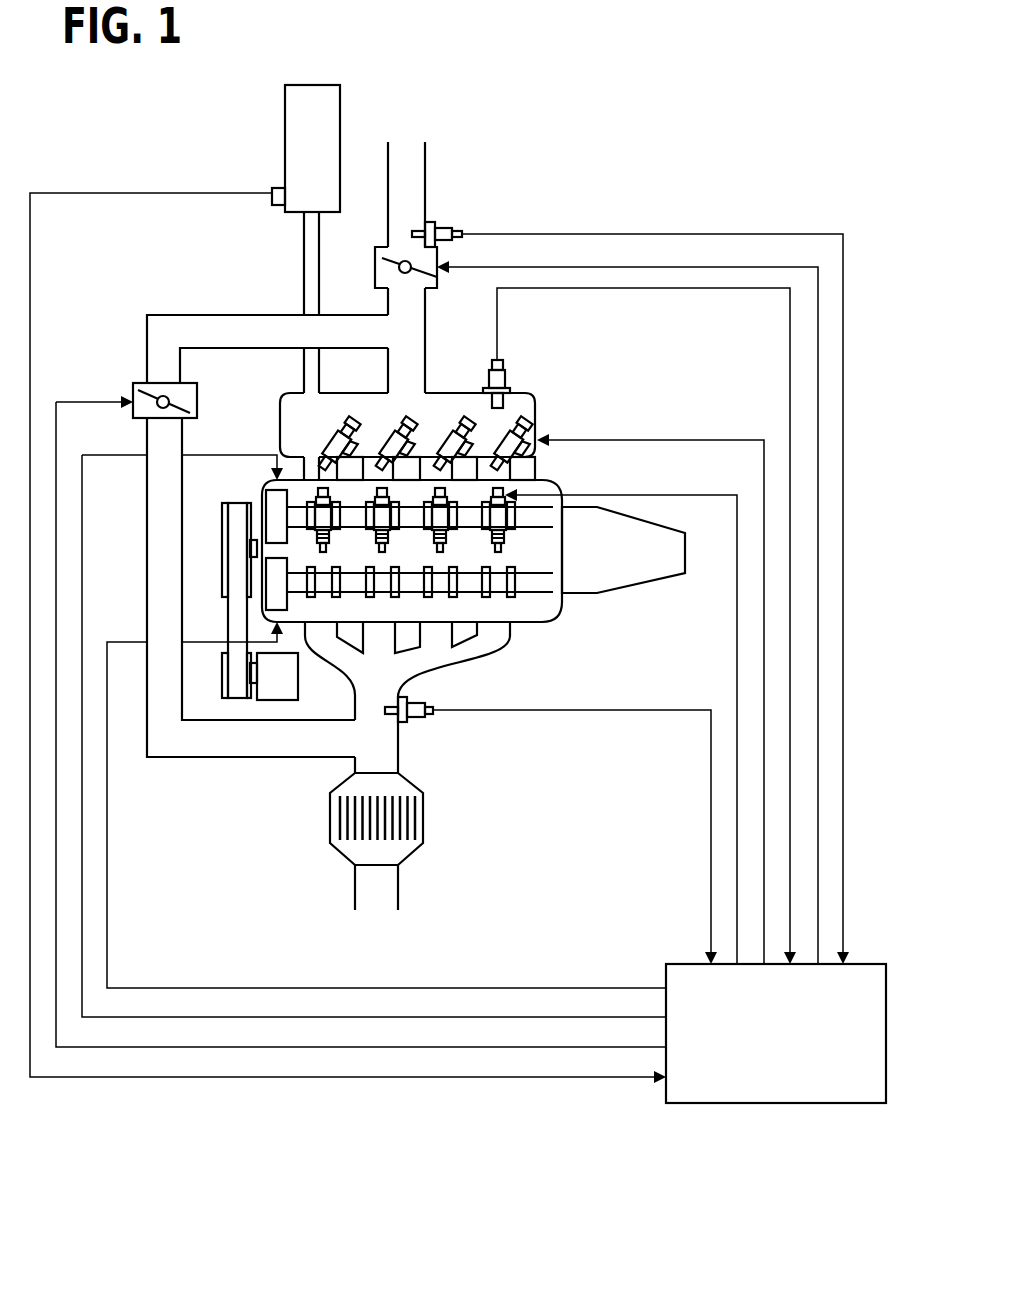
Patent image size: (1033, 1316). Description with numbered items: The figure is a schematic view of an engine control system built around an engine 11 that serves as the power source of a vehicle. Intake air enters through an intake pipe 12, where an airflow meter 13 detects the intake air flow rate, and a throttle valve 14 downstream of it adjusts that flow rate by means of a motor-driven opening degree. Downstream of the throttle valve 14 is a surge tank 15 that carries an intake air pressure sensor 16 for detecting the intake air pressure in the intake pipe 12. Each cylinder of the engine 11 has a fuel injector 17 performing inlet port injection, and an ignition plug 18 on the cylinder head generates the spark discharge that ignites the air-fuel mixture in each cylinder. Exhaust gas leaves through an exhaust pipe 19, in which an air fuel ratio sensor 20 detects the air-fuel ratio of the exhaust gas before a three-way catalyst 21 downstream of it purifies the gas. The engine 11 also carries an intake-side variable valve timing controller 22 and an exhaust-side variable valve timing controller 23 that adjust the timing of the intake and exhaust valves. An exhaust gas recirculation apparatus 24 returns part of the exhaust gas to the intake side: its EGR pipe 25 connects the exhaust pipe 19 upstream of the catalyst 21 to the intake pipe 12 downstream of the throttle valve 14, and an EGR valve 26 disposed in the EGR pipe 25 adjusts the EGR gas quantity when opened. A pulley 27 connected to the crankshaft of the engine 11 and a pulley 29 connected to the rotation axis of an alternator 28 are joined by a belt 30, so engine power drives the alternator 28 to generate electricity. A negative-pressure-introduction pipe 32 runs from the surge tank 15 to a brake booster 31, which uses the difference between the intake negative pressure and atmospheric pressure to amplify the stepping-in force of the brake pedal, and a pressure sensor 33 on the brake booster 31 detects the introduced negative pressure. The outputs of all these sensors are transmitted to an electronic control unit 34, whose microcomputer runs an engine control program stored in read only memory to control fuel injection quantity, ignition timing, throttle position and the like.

The engine 11 is at (558, 634).
The intake pipe 12 is at (428, 170).
The airflow meter 13 is at (445, 223).
The throttle valve 14 is at (420, 277).
The surge tank 15 is at (533, 390).
The intake air pressure sensor 16 is at (505, 378).
The fuel injector 17 is at (518, 410).
The ignition plug 18 is at (520, 516).
The exhaust pipe 19 is at (400, 750).
The air fuel ratio sensor 20 is at (418, 700).
The three-way catalyst 21 is at (427, 817).
The intake-side variable valve timing controller 22 is at (268, 497).
The exhaust-side variable valve timing controller 23 is at (290, 602).
The exhaust gas recirculation (EGR) apparatus 24 is at (140, 346).
The EGR pipe 25 is at (147, 570).
The EGR valve 26 is at (152, 392).
The pulley 27 is at (223, 543).
The alternator 28 is at (278, 700).
The pulley 29 is at (221, 673).
The belt 30 is at (228, 627).
The brake booster 31 is at (285, 110).
The negative-pressure-introduction pipe 32 is at (304, 258).
The pressure sensor 33 is at (278, 187).
The electronic control unit (ECU) 34 is at (775, 1103).